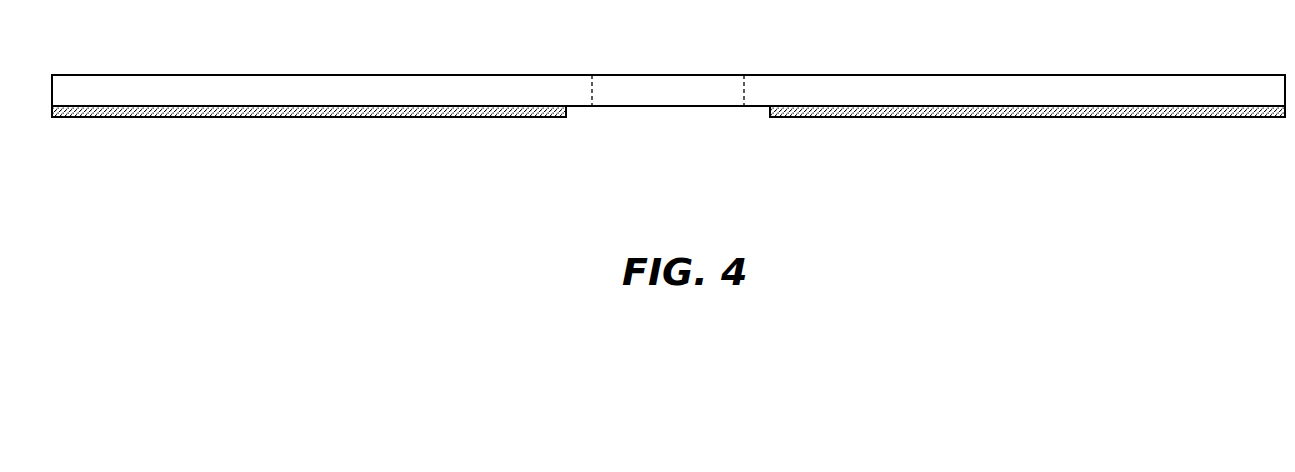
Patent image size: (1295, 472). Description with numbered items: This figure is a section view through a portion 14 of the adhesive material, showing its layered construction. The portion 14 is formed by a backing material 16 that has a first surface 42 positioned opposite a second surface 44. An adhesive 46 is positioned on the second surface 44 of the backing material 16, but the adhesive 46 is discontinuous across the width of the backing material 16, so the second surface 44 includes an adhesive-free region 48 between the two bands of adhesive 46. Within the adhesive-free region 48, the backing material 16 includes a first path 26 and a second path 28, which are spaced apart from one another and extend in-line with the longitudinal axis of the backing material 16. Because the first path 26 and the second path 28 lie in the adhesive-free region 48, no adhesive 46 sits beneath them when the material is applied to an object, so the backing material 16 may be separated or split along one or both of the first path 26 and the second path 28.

The portion of the adhesive material 14 is at (672, 112).
The backing material 16 is at (946, 93).
The first path 26 is at (746, 92).
The second path 28 is at (594, 92).
The first surface 42 is at (1069, 75).
The second surface 44 is at (698, 108).
The adhesive 46 is at (1068, 118).
The adhesive-free region 48 is at (771, 138).